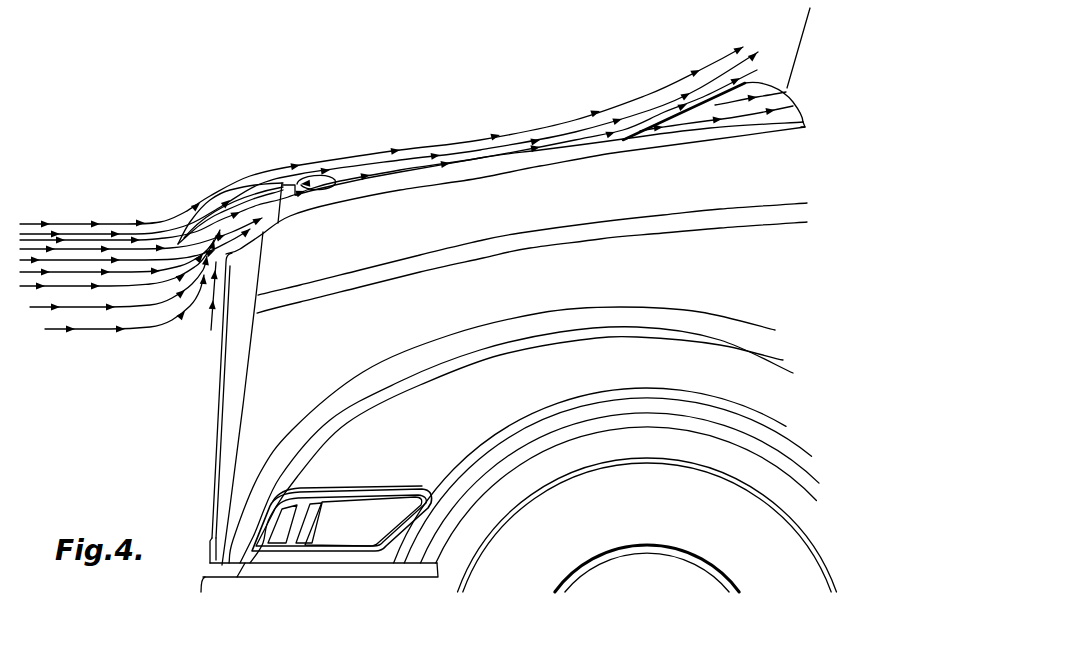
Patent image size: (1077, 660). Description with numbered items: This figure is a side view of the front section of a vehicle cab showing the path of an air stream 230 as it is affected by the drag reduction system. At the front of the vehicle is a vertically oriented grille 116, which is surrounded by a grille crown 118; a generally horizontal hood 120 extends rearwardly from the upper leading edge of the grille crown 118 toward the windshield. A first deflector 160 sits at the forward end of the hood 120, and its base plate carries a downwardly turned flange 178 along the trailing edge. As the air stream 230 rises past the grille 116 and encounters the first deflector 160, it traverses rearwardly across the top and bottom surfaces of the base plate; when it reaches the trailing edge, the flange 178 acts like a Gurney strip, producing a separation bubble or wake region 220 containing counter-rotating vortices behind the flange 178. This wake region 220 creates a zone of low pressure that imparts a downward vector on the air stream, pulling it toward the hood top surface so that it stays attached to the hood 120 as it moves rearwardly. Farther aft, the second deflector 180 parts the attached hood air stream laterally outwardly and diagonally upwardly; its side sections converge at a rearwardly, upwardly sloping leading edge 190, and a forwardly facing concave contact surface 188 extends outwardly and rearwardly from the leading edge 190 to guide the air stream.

The air stream 230 is at (67, 218).
The first deflector 160 is at (196, 209).
The wake region 220 is at (331, 181).
The downwardly turned flange 178 is at (297, 197).
The hood 120 is at (517, 169).
The leading edge 190 is at (658, 121).
The second deflector 180 is at (776, 80).
The contact surface 188 is at (788, 110).
The grille 116 is at (213, 395).
The grille crown 118 is at (222, 538).